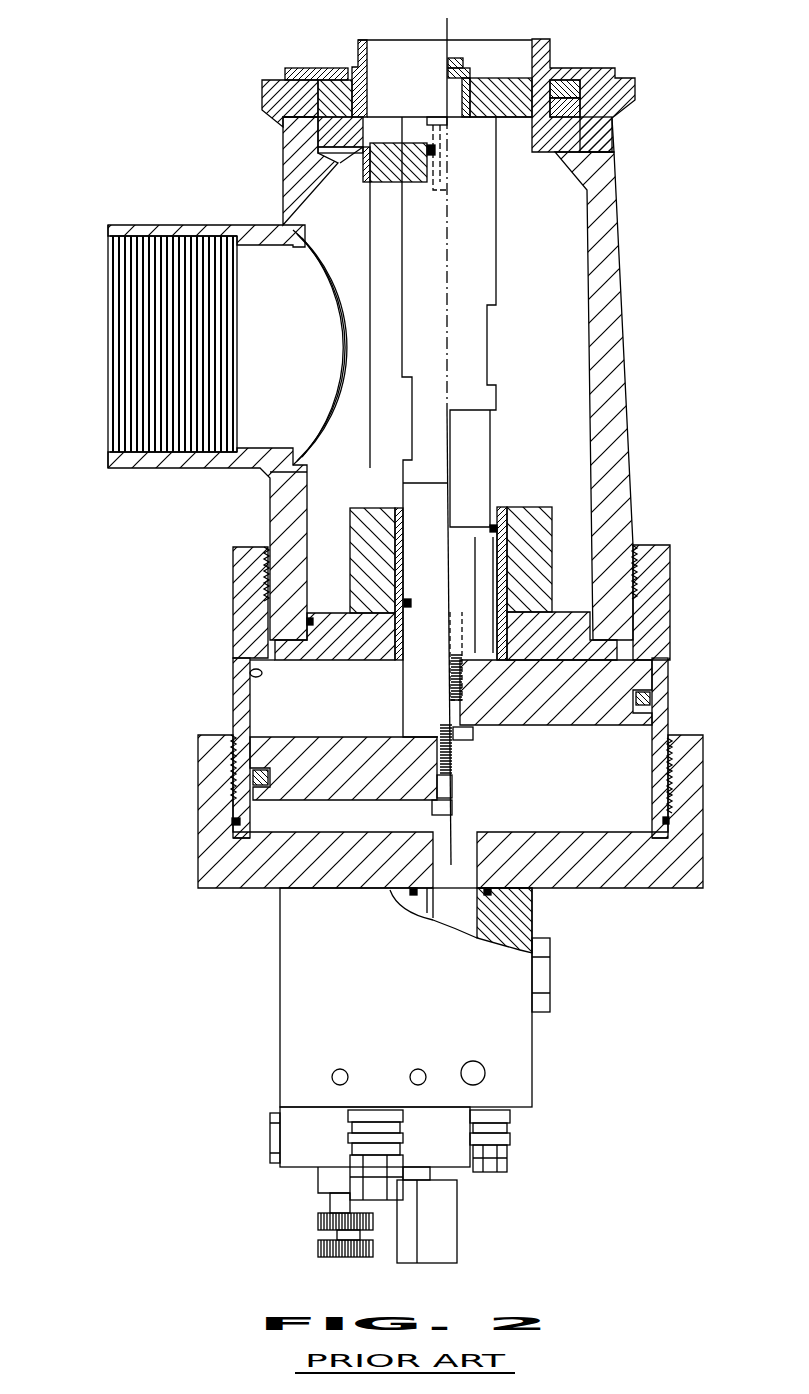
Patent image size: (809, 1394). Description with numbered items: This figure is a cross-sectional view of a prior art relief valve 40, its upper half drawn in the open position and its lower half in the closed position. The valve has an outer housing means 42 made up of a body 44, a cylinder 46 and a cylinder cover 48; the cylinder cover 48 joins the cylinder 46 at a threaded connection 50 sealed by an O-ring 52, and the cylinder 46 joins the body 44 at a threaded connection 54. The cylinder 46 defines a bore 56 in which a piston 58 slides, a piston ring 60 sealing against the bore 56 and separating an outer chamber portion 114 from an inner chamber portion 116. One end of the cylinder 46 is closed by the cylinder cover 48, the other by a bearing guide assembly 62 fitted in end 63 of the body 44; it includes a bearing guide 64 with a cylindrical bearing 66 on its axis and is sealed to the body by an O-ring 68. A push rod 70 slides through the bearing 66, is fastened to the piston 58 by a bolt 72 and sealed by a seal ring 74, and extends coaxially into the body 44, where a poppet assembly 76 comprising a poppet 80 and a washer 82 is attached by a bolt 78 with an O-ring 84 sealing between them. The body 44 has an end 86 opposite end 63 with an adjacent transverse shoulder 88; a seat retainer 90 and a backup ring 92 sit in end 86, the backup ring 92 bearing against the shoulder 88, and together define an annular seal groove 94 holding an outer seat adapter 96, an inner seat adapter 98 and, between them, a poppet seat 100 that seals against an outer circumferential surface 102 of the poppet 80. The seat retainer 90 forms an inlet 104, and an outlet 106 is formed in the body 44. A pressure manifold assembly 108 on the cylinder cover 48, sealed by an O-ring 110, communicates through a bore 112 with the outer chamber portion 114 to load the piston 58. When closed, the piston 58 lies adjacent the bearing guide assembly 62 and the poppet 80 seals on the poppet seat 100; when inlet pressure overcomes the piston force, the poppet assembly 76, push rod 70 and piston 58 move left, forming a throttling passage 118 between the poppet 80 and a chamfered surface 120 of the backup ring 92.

The prior art relief valve 40 is at (95, 783).
The outer housing means 42 is at (405, 503).
The body 44 is at (239, 378).
The cylinder 46 is at (240, 694).
The cylinder cover 48 is at (230, 870).
The threaded connection 50 is at (228, 800).
The O-ring 52 is at (233, 823).
The threaded connection 54 is at (263, 573).
The bore 56 is at (250, 673).
The piston 58 is at (267, 752).
The piston ring 60 is at (253, 777).
The bearing guide assembly 62 is at (482, 583).
The end 63 is at (312, 630).
The bearing guide 64 is at (357, 528).
The bearing 66 is at (395, 550).
The O-ring 68 is at (313, 623).
The push rod 70 is at (415, 265).
The bolt 72 is at (430, 807).
The seal ring 74 is at (408, 603).
The poppet assembly 76 is at (455, 323).
The bolt 78 is at (430, 117).
The poppet 80 is at (392, 175).
The washer 82 is at (407, 140).
The O-ring 84 is at (430, 157).
The end 86 is at (332, 80).
The transverse shoulder 88 is at (320, 148).
The seat retainer 90 is at (290, 70).
The backup ring 92 is at (333, 130).
The seal groove 94 is at (352, 70).
The outer seat adapter 96 is at (553, 87).
The inner seat adapter 98 is at (562, 113).
The poppet seat 100 is at (558, 100).
The outer circumferential surface 102 is at (367, 170).
The inlet 104 is at (385, 43).
The outlet 106 is at (162, 222).
The pressure manifold assembly 108 is at (313, 1042).
The O-ring 110 is at (493, 913).
The bore 112 is at (472, 867).
The outer chamber portion 114 is at (300, 827).
The inner chamber portion 116 is at (300, 713).
The passage 118 is at (340, 163).
The chamfered surface 120 is at (330, 137).